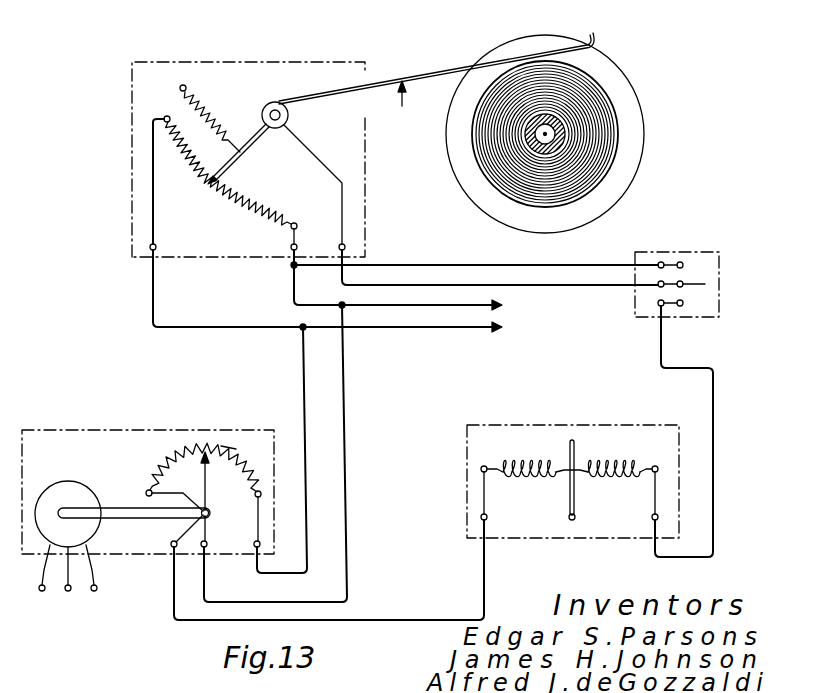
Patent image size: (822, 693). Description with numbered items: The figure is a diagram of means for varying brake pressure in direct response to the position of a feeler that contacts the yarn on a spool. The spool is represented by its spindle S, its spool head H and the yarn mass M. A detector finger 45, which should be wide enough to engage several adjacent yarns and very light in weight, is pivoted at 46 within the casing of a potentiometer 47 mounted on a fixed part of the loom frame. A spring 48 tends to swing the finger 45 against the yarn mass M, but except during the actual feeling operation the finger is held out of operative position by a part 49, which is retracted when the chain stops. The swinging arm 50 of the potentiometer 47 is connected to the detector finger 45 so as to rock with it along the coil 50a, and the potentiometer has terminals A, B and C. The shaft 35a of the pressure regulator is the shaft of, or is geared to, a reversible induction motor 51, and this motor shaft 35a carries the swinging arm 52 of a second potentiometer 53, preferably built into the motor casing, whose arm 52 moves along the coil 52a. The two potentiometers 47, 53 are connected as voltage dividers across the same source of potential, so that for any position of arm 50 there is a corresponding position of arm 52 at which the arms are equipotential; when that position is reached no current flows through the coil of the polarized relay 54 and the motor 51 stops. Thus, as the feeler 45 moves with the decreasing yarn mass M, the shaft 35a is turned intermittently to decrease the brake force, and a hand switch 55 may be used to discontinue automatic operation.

The detector finger 45 is at (497, 63).
The pivot 46 is at (266, 111).
The potentiometer 47 is at (292, 72).
The spring 48 is at (205, 95).
The retractable holding part 49 is at (404, 98).
The swinging arm of the potentiometer 50 is at (244, 151).
The potentiometer coil 50a is at (278, 194).
The reversible induction motor 51 is at (62, 490).
The swinging arm of the second potentiometer 52 is at (200, 473).
The second potentiometer coil 52a is at (238, 452).
The second potentiometer 53 is at (33, 442).
The polarized relay 54 is at (538, 523).
The hand switch 55 is at (730, 254).
The shaft of the pressure regulator 35a is at (112, 510).
The spool head H is at (625, 77).
The yarn mass M is at (610, 135).
The spindle S is at (562, 130).
The terminal A is at (163, 239).
The terminal B is at (284, 243).
The terminal C is at (333, 243).